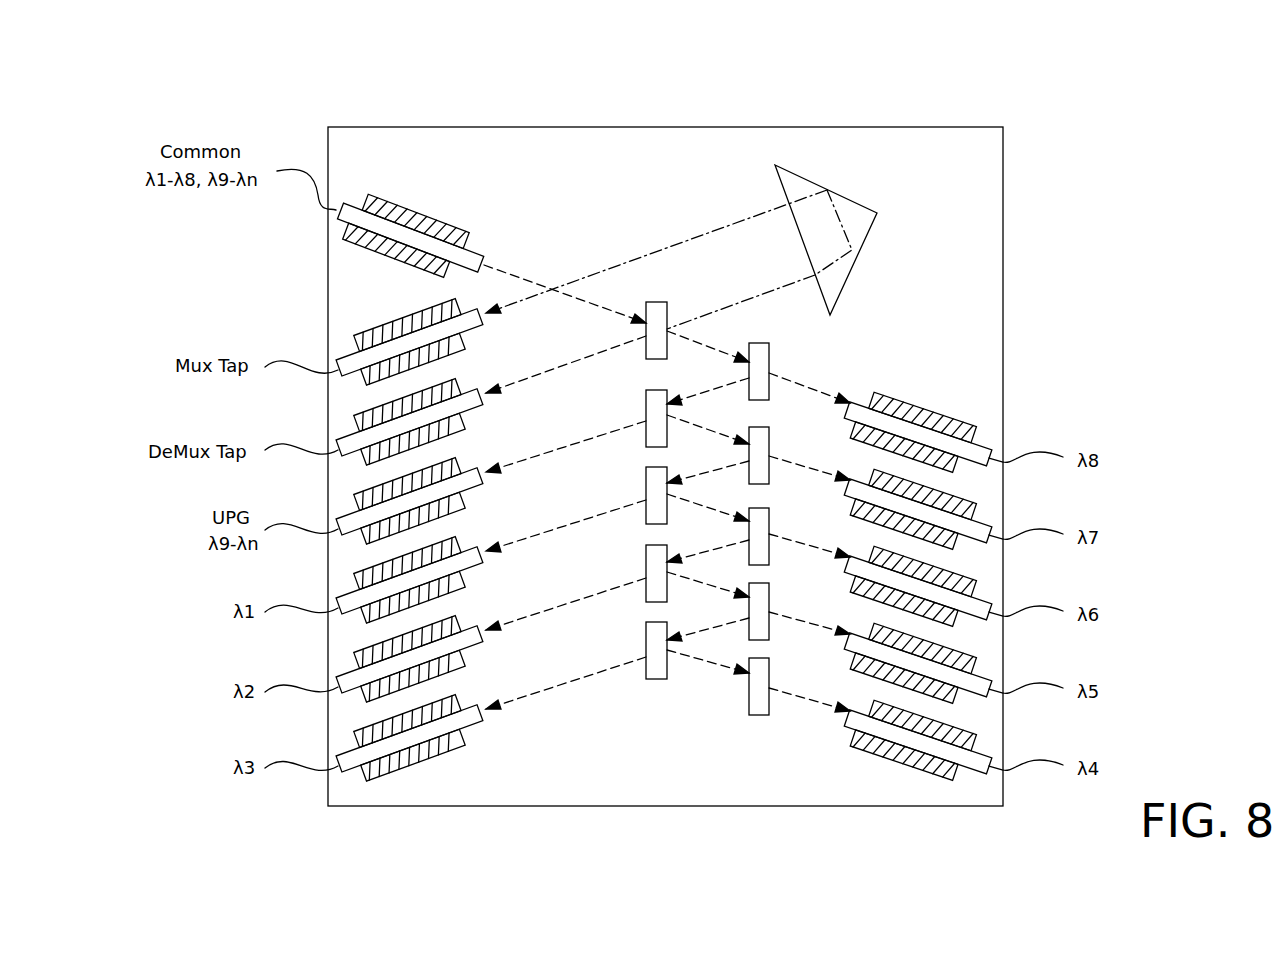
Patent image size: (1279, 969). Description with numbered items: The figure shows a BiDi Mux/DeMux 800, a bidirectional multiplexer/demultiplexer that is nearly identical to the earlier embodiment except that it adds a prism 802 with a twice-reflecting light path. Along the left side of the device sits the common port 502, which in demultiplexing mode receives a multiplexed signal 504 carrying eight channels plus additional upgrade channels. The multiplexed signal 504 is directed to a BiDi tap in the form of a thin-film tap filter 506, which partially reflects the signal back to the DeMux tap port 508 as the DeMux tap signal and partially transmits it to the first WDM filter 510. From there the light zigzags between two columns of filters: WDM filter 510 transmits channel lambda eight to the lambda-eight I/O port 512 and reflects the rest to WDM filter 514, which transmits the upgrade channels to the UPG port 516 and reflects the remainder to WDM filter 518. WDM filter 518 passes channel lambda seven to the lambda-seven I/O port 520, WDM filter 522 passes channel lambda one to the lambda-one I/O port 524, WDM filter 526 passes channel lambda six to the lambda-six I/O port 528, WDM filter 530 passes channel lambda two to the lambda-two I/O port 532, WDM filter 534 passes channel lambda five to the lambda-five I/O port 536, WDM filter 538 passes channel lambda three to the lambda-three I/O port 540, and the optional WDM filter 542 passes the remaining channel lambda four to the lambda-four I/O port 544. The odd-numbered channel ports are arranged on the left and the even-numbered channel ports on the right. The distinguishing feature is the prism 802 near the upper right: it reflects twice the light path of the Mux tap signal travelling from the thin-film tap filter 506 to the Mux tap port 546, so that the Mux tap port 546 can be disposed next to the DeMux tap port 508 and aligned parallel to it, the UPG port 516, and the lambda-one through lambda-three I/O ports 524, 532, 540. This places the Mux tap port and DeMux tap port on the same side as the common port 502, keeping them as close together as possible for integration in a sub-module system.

The BiDi Mux/DeMux 800 is at (405, 90).
The prism 802 is at (850, 200).
The common port 502 is at (452, 217).
The multiplexed signal 504 is at (505, 272).
The thin-film tap filter 506 is at (659, 301).
The DeMux tap port 508 is at (474, 388).
The WDM filter 510 is at (769, 361).
The λ8 I/O port 512 is at (853, 401).
The WDM filter 514 is at (646, 403).
The UPG port 516 is at (474, 473).
The WDM filter 518 is at (769, 445).
The λ7 I/O port 520 is at (853, 479).
The WDM filter 522 is at (646, 481).
The λ1 I/O port 524 is at (474, 551).
The WDM filter 526 is at (769, 526).
The λ6 I/O port 528 is at (853, 554).
The WDM filter 530 is at (646, 558).
The λ2 I/O port 532 is at (474, 633).
The WDM filter 534 is at (769, 601).
The λ5 I/O port 536 is at (853, 631).
The WDM filter 538 is at (646, 635).
The λ3 I/O port 540 is at (474, 711).
The WDM filter 542 is at (769, 676).
The λ4 I/O port 544 is at (853, 707).
The Mux tap port 546 is at (397, 316).